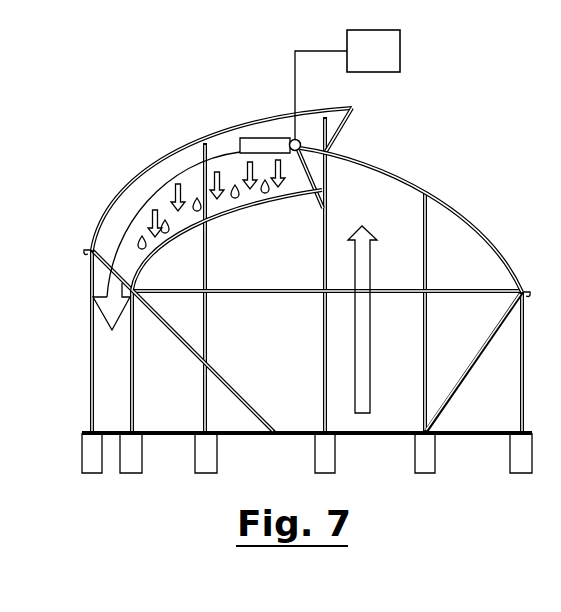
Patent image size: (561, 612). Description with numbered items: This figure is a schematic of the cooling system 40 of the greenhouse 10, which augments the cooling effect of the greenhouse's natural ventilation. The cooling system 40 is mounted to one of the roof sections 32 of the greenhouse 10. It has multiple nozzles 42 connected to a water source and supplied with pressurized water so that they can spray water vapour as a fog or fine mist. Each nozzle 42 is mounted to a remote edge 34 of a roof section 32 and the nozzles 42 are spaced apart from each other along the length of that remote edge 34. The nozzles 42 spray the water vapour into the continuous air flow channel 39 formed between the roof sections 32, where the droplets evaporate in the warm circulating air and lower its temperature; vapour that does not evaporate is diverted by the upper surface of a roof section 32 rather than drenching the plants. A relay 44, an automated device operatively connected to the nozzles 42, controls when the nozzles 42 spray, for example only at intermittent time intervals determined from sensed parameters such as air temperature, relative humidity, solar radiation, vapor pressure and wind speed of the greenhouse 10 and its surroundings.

The greenhouse 10 is at (98, 137).
The roof section 32 is at (423, 191).
The remote edge 34 is at (305, 144).
The continuous air flow channel 39 is at (243, 162).
The cooling system 40 is at (288, 132).
The nozzle 42 is at (305, 138).
The relay 44 is at (387, 62).